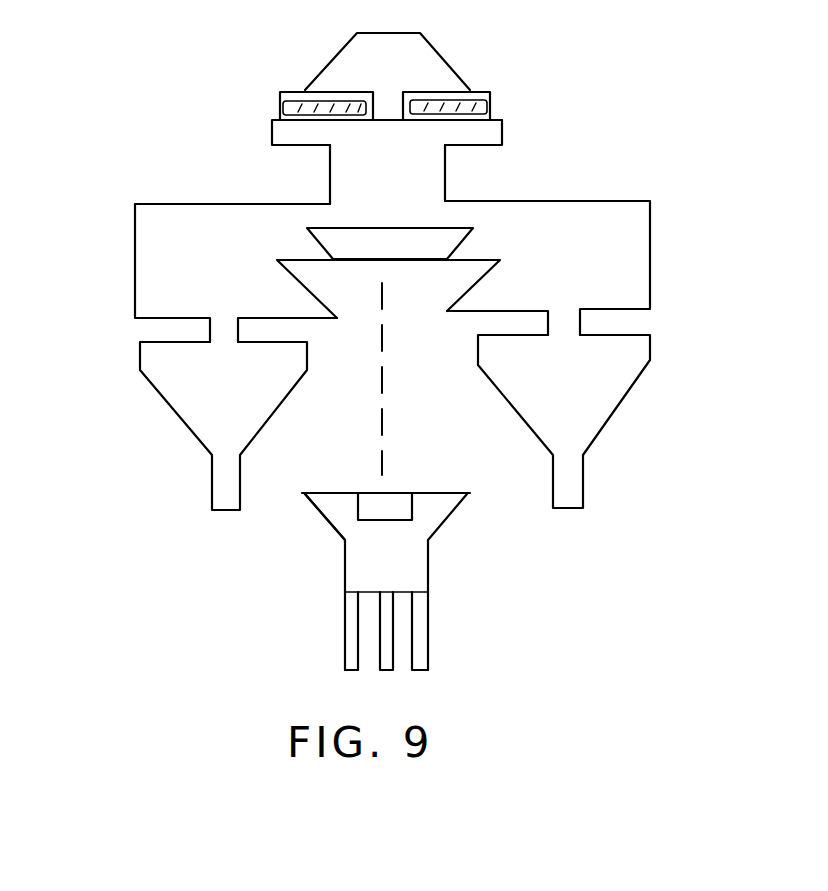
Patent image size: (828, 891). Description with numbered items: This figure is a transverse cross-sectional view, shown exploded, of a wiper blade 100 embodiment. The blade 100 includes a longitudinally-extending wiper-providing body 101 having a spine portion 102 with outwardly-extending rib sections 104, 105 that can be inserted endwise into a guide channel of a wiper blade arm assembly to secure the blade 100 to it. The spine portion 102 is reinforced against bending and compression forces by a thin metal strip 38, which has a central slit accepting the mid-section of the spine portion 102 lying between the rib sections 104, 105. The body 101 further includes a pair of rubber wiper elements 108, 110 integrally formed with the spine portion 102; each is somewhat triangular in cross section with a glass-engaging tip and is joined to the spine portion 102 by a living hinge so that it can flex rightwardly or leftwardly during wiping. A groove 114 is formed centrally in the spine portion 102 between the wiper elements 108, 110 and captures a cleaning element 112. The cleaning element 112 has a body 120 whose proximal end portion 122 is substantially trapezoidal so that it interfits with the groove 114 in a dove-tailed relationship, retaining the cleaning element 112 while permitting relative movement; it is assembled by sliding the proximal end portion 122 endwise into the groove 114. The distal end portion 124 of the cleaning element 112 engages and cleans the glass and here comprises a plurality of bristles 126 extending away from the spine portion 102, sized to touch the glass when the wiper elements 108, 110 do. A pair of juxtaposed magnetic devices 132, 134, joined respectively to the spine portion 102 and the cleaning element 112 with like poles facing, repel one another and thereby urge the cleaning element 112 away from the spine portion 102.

The blade 100 is at (172, 92).
The thin metal strip 38 is at (488, 103).
The rib section 104 is at (273, 137).
The rib section 105 is at (503, 135).
The spine portion 102 is at (448, 172).
The wiper-providing body 101 is at (622, 190).
The groove 114 is at (297, 262).
The magnetic device 132 is at (412, 262).
The rubber wiper element 108 is at (162, 395).
The rubber wiper element 110 is at (622, 395).
The magnetic device 134 is at (393, 492).
The proximal end portion 122 is at (330, 520).
The cleaning element 112 is at (418, 563).
The body 120 is at (345, 582).
The distal end portion 124 is at (430, 637).
The bristles 126 is at (383, 648).